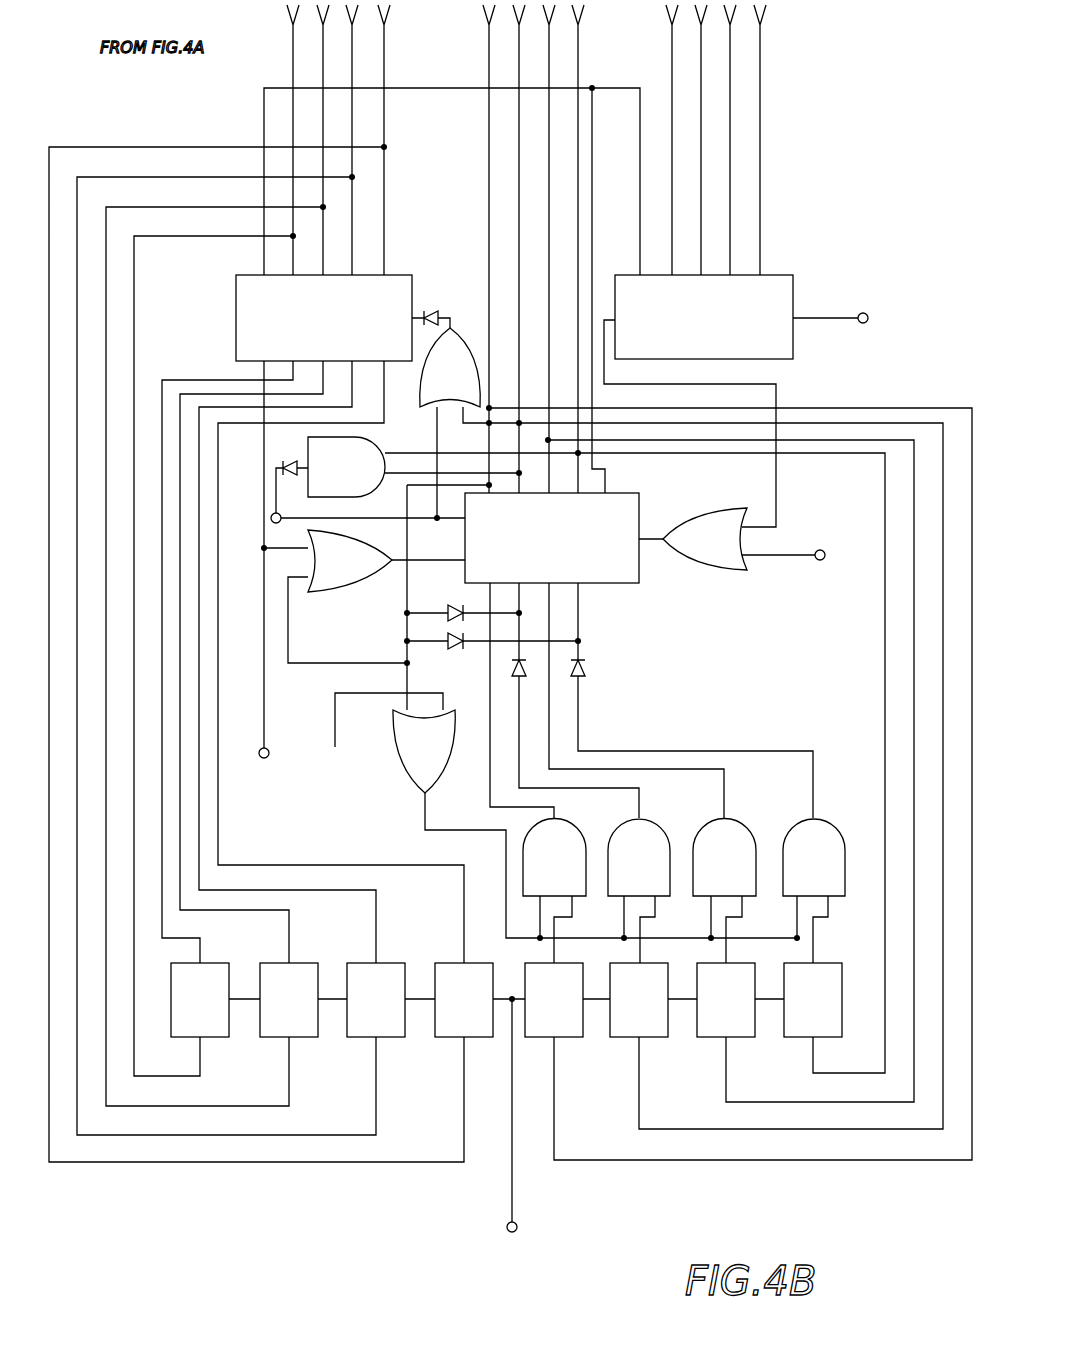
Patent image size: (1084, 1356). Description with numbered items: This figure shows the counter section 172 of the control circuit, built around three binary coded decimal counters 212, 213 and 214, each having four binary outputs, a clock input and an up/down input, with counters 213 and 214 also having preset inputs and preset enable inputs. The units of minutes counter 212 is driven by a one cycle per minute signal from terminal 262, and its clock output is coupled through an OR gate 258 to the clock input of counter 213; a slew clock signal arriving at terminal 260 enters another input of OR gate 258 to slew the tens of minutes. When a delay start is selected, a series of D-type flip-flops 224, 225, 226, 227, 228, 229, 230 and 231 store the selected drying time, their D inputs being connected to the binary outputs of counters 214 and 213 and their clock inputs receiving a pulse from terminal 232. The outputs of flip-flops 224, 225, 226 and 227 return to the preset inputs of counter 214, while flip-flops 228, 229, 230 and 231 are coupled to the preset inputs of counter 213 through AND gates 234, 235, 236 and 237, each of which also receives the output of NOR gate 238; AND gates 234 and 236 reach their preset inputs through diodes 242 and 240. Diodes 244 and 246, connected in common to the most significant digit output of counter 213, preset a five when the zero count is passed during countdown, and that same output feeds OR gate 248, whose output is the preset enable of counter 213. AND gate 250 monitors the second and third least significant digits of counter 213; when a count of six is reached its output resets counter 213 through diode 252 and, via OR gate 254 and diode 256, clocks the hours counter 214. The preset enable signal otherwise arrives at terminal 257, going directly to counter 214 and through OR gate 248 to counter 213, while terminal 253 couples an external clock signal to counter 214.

The counter section 172 is at (447, 216).
The units of minutes counter 212 is at (706, 329).
The counter 213 is at (556, 544).
The counter 214 is at (335, 327).
The D-type flip-flop 224 is at (219, 1010).
The D-type flip-flop 225 is at (308, 1010).
The D-type flip-flop 226 is at (395, 1010).
The D-type flip-flop 227 is at (483, 1010).
The D-type flip-flop 228 is at (573, 1010).
The D-type flip-flop 229 is at (658, 1010).
The D-type flip-flop 230 is at (745, 1010).
The D-type flip-flop 231 is at (832, 1010).
The terminal 232 is at (518, 1229).
The AND gate 234 is at (834, 874).
The AND gate 235 is at (744, 874).
The AND gate 236 is at (659, 874).
The AND gate 237 is at (574, 874).
The NOR gate 238 is at (410, 760).
The diode 240 is at (510, 673).
The diode 242 is at (581, 676).
The diode 244 is at (456, 650).
The diode 246 is at (455, 607).
The OR gate 248 is at (365, 571).
The AND gate 250 is at (368, 477).
The diode 252 is at (291, 461).
The terminal 253 is at (271, 521).
The OR gate 254 is at (470, 392).
The diode 256 is at (431, 311).
The terminal 257 is at (261, 770).
The OR gate 258 is at (698, 573).
The terminal 260 is at (822, 561).
The terminal 262 is at (864, 324).